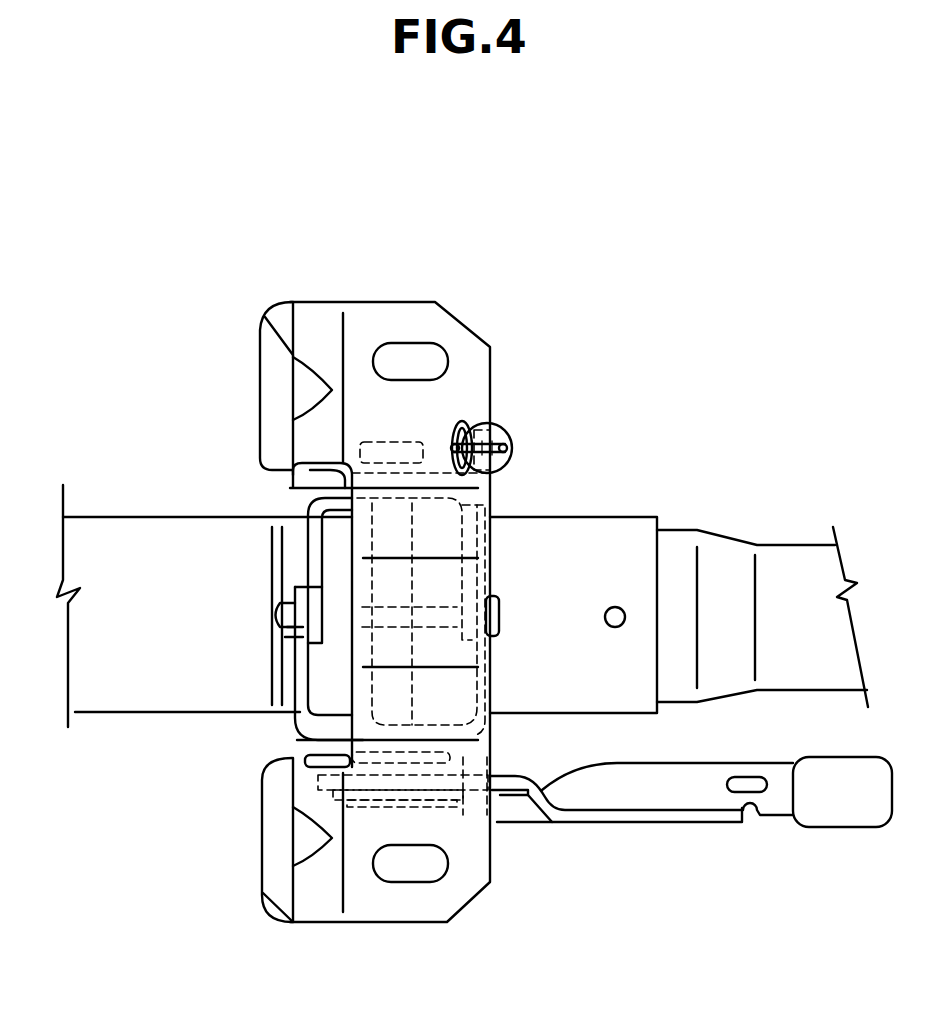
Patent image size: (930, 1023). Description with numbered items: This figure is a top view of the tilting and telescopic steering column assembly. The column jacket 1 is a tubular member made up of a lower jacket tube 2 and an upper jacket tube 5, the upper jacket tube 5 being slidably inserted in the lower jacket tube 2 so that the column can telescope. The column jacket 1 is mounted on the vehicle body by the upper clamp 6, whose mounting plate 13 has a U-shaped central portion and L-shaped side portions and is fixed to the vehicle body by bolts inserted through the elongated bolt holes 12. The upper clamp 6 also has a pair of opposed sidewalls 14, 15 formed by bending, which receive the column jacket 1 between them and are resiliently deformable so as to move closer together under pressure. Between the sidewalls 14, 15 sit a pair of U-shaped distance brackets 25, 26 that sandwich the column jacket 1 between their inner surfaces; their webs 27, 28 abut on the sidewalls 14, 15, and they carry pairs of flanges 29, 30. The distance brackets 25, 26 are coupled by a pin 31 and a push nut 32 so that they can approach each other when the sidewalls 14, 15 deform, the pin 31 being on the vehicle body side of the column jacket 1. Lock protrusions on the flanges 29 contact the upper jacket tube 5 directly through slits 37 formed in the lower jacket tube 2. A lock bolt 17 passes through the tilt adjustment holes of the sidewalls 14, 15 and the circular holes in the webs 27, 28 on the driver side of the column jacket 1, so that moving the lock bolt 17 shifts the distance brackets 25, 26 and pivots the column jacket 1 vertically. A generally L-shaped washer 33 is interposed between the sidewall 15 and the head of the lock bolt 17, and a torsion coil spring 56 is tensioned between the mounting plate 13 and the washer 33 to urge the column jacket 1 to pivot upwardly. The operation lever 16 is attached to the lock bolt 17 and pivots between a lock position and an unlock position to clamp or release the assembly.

The column jacket 1 is at (660, 516).
The lower jacket tube 2 is at (147, 540).
The upper jacket tube 5 is at (783, 563).
The upper clamp 6 is at (386, 303).
The elongated bolt holes 12 is at (433, 350).
The mounting plate 13 is at (277, 790).
The sidewall 14 is at (332, 752).
The sidewall 15 is at (335, 470).
The operation lever 16 is at (773, 807).
The lock bolt 17 is at (412, 545).
The distance bracket 25 is at (293, 663).
The distance bracket 26 is at (305, 536).
The web 27 is at (445, 730).
The web 28 is at (433, 492).
The flanges 29 is at (295, 637).
The flanges 30 is at (300, 561).
The pin 31 is at (430, 618).
The push nut 32 is at (293, 595).
The washer 33 is at (386, 468).
The slits 37 is at (287, 708).
The torsion coil spring 56 is at (507, 463).